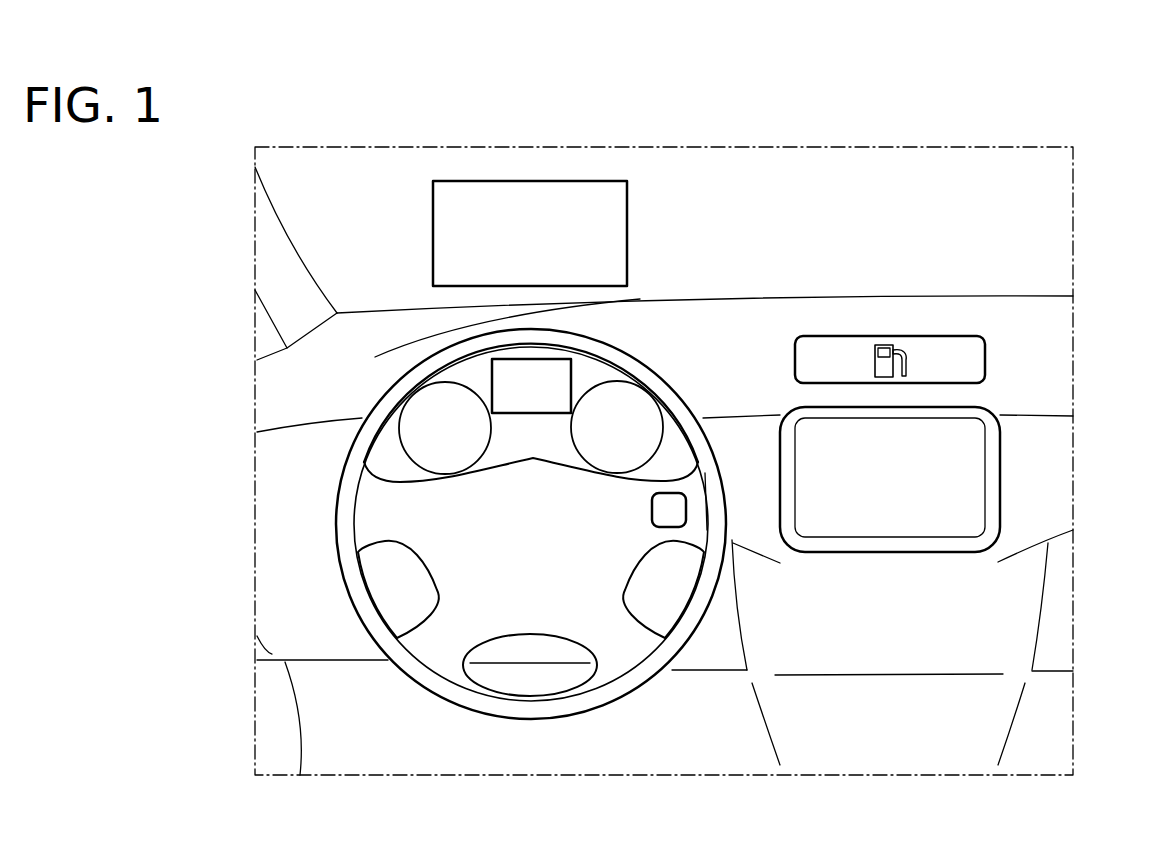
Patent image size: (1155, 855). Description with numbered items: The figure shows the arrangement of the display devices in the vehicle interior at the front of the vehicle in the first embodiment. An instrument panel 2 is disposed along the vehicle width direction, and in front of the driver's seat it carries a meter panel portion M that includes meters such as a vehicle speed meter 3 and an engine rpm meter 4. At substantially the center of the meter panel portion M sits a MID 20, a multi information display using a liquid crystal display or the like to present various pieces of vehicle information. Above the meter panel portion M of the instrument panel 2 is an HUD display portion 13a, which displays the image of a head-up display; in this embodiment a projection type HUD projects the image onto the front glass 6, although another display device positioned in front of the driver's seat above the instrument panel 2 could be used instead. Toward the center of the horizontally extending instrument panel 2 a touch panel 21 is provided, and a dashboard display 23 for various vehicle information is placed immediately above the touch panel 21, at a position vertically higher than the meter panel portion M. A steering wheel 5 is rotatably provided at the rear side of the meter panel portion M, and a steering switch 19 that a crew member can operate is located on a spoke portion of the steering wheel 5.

The instrument panel 2 is at (727, 329).
The vehicle speed meter 3 is at (632, 415).
The engine rpm meter 4 is at (425, 413).
The steering wheel 5 is at (710, 619).
The front glass 6 is at (418, 212).
The HUD display portion 13a is at (605, 230).
The steering switch 19 is at (688, 507).
The MID (Multi Information Display) 20 is at (562, 375).
The touch panel 21 is at (967, 470).
The dashboard display 23 is at (975, 362).
The meter panel portion M is at (474, 378).